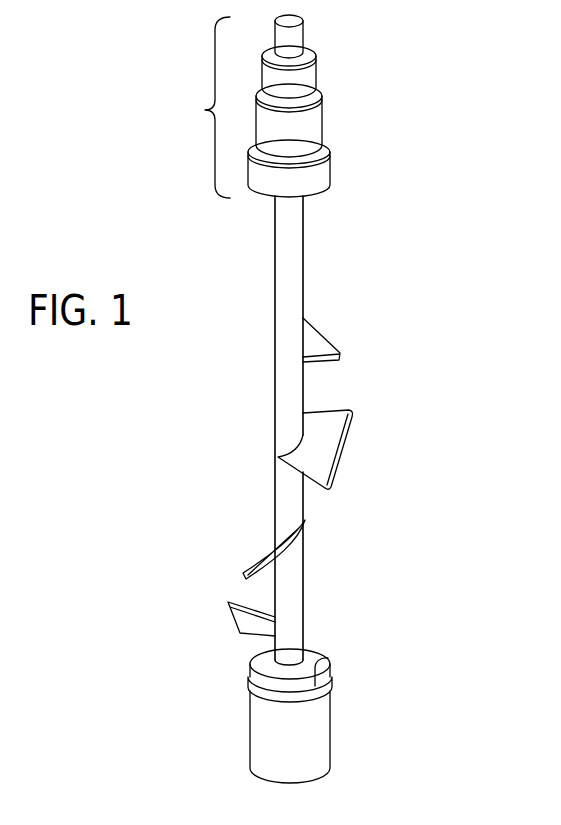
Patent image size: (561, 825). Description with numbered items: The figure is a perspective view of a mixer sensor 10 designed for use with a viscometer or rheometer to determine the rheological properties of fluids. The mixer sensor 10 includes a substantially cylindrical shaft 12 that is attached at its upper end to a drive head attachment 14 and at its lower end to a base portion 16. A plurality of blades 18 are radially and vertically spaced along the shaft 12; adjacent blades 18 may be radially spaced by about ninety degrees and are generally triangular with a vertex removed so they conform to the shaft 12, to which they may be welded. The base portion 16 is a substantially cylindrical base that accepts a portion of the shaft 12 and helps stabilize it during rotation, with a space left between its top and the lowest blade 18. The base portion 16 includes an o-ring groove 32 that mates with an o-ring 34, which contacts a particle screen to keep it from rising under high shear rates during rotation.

The mixer sensor 10 is at (444, 119).
The shaft 12 is at (293, 248).
The drive head attachment 14 is at (206, 110).
The base portion 16 is at (315, 737).
The blades 18 is at (322, 345).
The o-ring groove 32 is at (330, 658).
The o-ring 34 is at (332, 681).